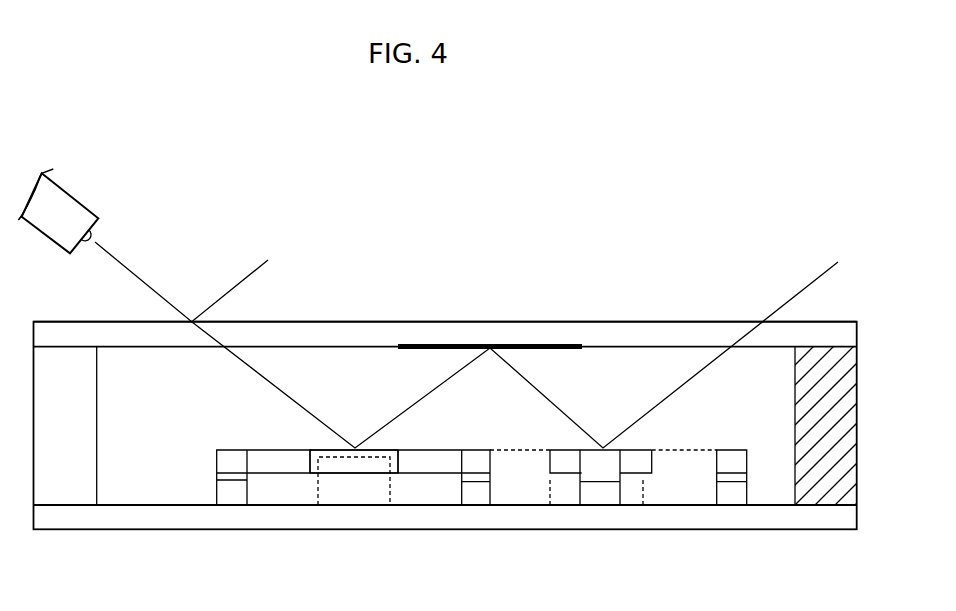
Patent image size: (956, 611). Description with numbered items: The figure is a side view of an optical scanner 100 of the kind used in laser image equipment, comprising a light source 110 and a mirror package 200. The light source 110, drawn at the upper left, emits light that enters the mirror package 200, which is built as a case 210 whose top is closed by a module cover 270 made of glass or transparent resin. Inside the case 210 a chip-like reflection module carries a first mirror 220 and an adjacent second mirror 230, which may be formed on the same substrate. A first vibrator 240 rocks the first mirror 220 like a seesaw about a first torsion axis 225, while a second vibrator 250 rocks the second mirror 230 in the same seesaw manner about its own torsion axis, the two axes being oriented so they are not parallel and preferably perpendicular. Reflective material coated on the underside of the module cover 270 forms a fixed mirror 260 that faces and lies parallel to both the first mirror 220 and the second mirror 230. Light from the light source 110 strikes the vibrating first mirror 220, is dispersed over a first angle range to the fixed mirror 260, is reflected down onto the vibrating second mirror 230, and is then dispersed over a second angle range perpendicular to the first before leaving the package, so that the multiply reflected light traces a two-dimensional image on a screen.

The optical scanner 100 is at (63, 134).
The light source 110 is at (75, 193).
The mirror package 200 is at (547, 287).
The case 210 is at (858, 475).
The first mirror 220 is at (388, 448).
The first torsion axis 225 is at (280, 460).
The second mirror 230 is at (607, 448).
The first vibrator 240 is at (391, 480).
The second vibrator 250 is at (550, 480).
The fixed mirror 260 is at (463, 346).
The module cover 270 is at (351, 322).